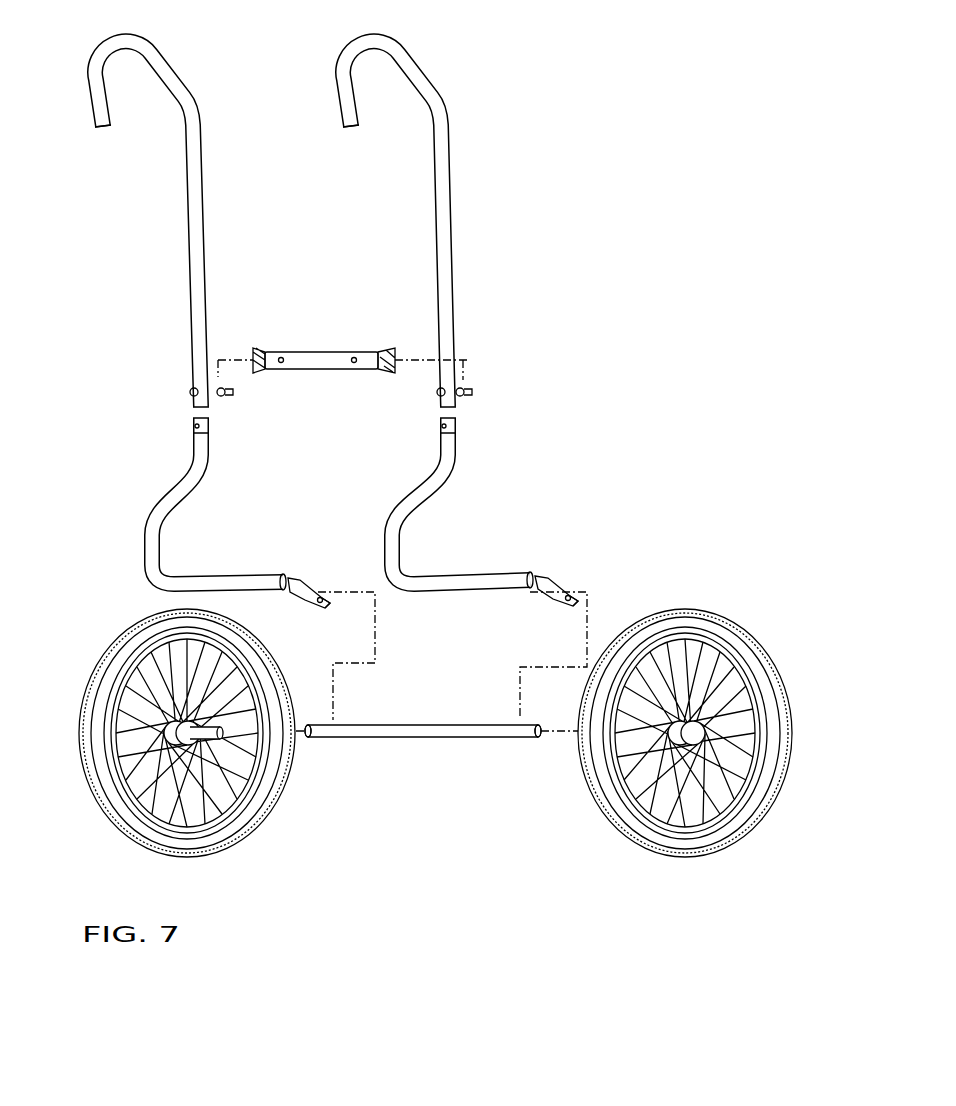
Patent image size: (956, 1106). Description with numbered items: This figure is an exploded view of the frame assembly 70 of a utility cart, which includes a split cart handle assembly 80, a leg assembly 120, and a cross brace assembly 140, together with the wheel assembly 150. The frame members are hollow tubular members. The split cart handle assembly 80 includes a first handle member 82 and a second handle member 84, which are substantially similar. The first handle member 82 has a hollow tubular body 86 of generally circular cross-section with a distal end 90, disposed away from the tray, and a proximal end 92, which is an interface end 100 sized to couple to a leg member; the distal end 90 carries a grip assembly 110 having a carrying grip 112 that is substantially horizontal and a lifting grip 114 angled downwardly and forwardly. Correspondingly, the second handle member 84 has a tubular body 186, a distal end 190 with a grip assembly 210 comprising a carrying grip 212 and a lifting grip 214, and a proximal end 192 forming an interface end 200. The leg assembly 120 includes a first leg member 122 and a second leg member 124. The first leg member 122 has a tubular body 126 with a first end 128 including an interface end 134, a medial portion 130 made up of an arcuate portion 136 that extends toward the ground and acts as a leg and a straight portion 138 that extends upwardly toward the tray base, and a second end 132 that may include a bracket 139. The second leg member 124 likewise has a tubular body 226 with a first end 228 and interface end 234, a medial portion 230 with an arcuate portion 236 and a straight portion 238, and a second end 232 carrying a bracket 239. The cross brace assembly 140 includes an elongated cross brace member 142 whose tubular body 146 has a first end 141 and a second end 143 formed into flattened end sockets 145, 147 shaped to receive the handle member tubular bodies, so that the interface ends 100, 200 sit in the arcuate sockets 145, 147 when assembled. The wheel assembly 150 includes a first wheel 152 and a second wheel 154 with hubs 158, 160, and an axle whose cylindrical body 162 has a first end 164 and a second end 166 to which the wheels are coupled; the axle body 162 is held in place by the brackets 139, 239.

The frame assembly 70 is at (136, 213).
The grip assembly 210 is at (172, 45).
The carrying grip 212 is at (172, 65).
The distal end 190 is at (107, 90).
The lifting grip 214 is at (104, 130).
The tubular body 186 is at (202, 147).
The second handle member 84 is at (204, 192).
The proximal end 192 is at (193, 357).
The interface end 200 is at (191, 392).
The split cart handle assembly 80 is at (502, 148).
The grip assembly 110 is at (424, 45).
The carrying grip 112 is at (422, 65).
The lifting grip 114 is at (354, 90).
The distal end 90 is at (354, 130).
The tubular body 86 is at (452, 178).
The first handle member 82 is at (453, 228).
The proximal end 92 is at (457, 358).
The cross brace assembly 140 is at (375, 306).
The first end 141 is at (362, 348).
The second end 143 is at (280, 348).
The flattened end socket 145 is at (398, 348).
The flattened end socket 147 is at (258, 368).
The tubular body 146 is at (295, 370).
The cross brace member 142 is at (332, 370).
The interface end 100 is at (386, 395).
The leg assembly 120 is at (143, 597).
The interface end 234 is at (196, 435).
The first end 228 is at (205, 478).
The medial portion 230 is at (146, 533).
The second leg member 124 is at (161, 547).
The tubular body 226 is at (175, 576).
The arcuate portion 236 is at (146, 582).
The straight portion 238 is at (217, 593).
The bracket 239 is at (307, 580).
The second end 232 is at (300, 607).
The medial portion 130 is at (389, 513).
The interface end 134 is at (460, 422).
The first end 128 is at (455, 472).
The first leg member 122 is at (403, 523).
The tubular body 126 is at (405, 574).
The arcuate portion 136 is at (400, 592).
The straight portion 138 is at (470, 592).
The bracket 139 is at (553, 583).
The second end 132 is at (520, 588).
The wheel assembly 150 is at (668, 583).
The axle body 162 is at (417, 737).
The second end 166 is at (327, 737).
The first end 164 is at (517, 737).
The second wheel 154 is at (209, 743).
The hub 158 is at (187, 733).
The hub 160 is at (243, 760).
The first wheel 152 is at (745, 690).